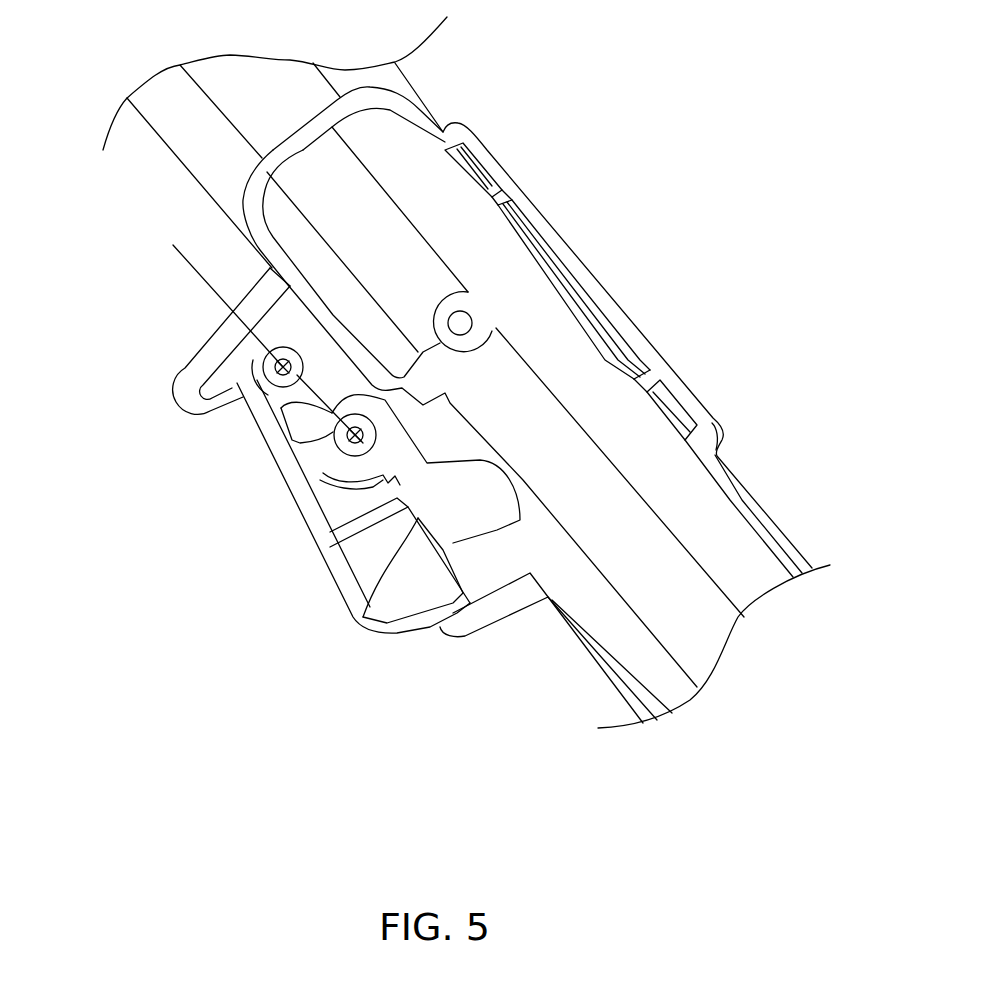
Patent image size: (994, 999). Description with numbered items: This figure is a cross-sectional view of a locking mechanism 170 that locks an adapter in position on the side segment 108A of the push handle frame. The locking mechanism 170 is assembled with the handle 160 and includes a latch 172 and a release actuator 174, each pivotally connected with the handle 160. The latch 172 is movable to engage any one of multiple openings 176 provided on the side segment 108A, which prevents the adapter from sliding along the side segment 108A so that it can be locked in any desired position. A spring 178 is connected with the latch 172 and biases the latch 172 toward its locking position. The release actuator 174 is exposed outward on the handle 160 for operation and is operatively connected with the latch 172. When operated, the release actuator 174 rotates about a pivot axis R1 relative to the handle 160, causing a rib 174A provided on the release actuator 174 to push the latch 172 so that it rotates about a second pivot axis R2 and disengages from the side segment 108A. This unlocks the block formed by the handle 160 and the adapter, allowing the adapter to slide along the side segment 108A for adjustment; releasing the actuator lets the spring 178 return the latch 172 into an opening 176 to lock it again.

The side segment 108A is at (176, 158).
The handle 160 is at (182, 375).
The locking mechanism 170 is at (444, 656).
The latch 172 is at (360, 622).
The release actuator 174 is at (327, 575).
The rib 174A is at (290, 436).
The openings 176 is at (457, 440).
The spring 178 is at (345, 488).
The pivot axis R1 is at (190, 263).
The pivot axis R2 is at (336, 444).